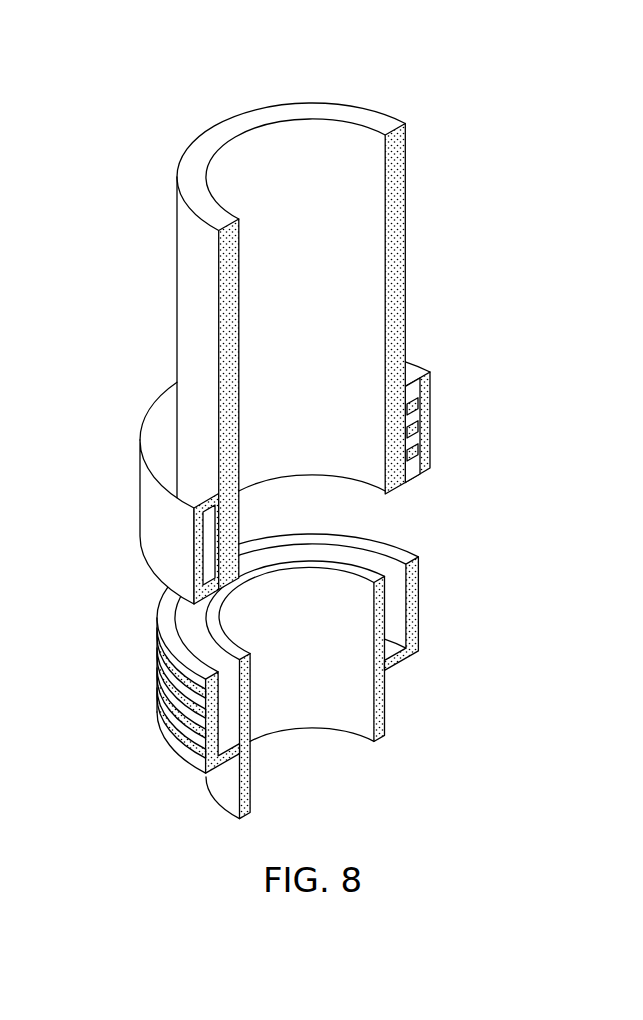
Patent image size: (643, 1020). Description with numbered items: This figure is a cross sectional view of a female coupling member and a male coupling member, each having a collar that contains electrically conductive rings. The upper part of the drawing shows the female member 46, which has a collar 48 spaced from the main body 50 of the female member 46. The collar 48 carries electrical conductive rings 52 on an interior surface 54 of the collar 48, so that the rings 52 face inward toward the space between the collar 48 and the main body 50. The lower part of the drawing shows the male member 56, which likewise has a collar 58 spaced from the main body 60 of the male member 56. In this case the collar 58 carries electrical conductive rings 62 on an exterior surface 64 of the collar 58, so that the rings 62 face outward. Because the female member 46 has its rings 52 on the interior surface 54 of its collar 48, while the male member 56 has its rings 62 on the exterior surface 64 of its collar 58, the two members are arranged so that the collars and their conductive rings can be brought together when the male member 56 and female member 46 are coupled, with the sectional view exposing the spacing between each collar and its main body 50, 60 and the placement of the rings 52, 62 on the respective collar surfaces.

The female member 46 is at (333, 353).
The collar 48 is at (333, 483).
The main body 50 is at (384, 460).
The electrical conductive rings 52 is at (412, 410).
The interior surface 54 is at (422, 428).
The male member 56 is at (344, 690).
The collar 58 is at (285, 647).
The main body 60 is at (373, 626).
The electrical conductive rings 62 is at (176, 728).
The exterior surface 64 is at (173, 682).